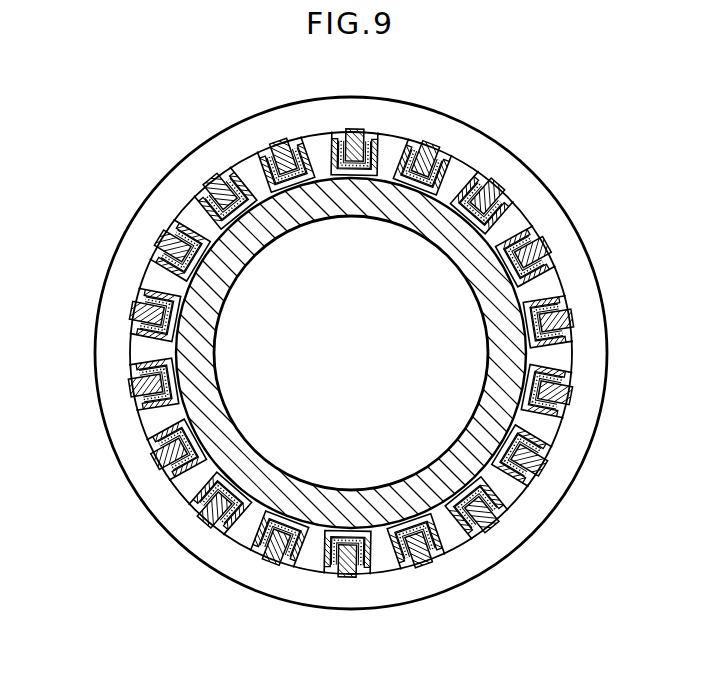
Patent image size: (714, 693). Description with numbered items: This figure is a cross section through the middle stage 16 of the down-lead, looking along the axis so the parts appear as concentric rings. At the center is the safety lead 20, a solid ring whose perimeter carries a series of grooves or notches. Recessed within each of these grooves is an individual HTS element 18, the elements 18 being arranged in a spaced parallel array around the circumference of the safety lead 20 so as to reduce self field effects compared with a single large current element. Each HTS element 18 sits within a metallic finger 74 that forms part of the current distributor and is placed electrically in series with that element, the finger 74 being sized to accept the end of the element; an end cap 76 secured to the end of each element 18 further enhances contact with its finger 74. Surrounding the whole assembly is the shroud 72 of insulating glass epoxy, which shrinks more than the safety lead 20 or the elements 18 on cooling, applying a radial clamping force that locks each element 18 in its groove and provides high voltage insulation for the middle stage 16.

The middle stage 16 is at (116, 481).
The HTS element 18 is at (357, 130).
The safety lead 20 is at (385, 210).
The shroud 72 is at (118, 245).
The finger 74 is at (262, 166).
The end cap 76 is at (330, 135).